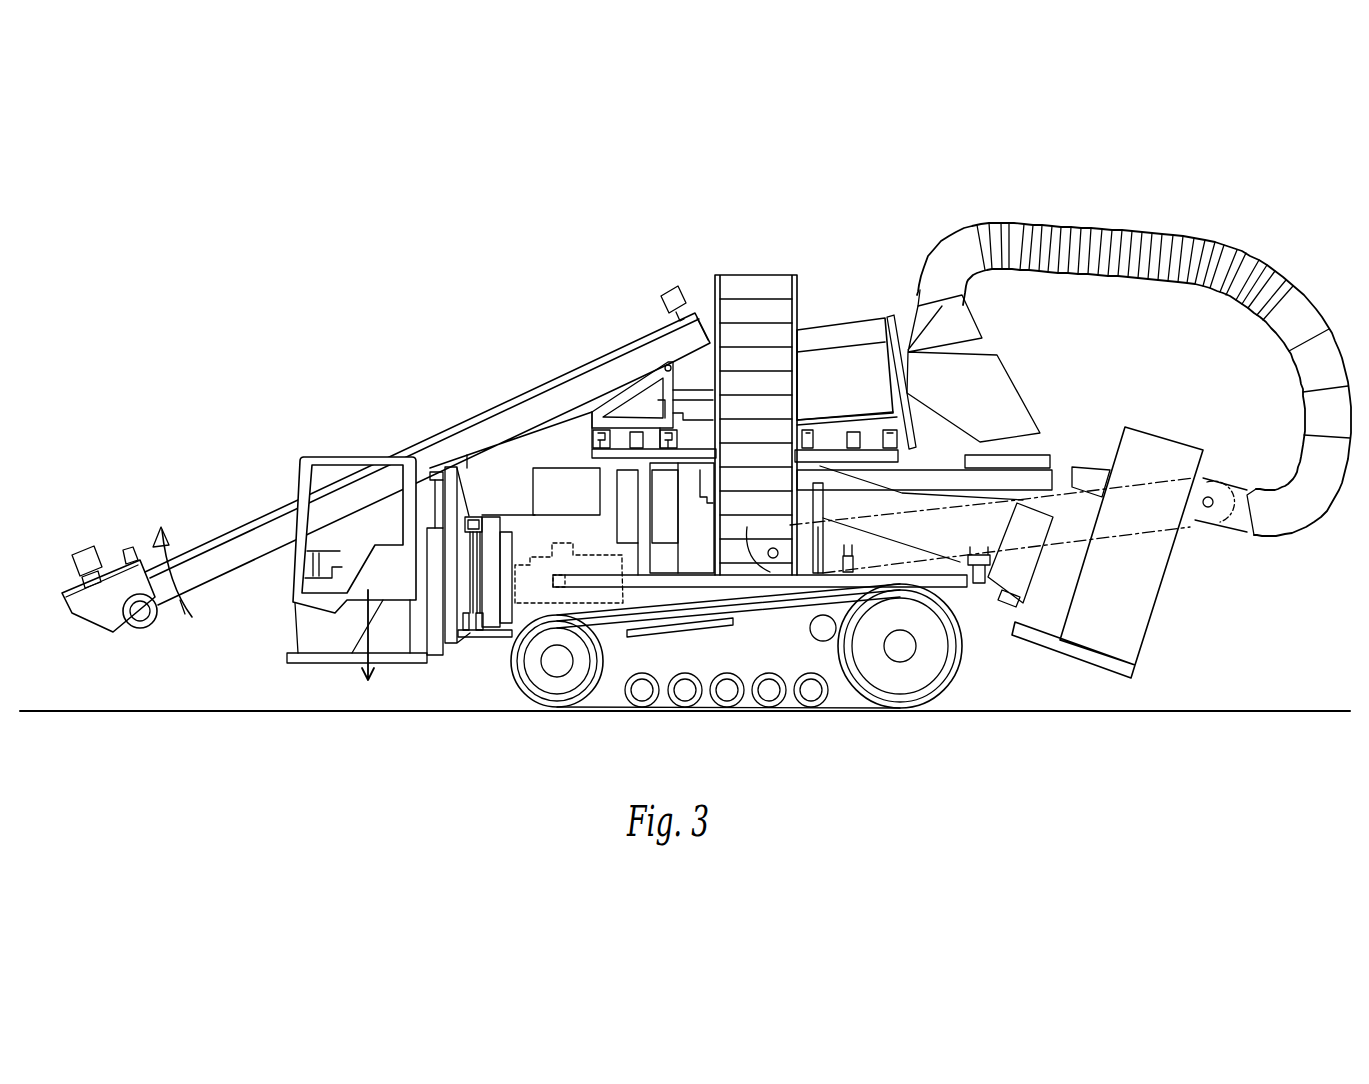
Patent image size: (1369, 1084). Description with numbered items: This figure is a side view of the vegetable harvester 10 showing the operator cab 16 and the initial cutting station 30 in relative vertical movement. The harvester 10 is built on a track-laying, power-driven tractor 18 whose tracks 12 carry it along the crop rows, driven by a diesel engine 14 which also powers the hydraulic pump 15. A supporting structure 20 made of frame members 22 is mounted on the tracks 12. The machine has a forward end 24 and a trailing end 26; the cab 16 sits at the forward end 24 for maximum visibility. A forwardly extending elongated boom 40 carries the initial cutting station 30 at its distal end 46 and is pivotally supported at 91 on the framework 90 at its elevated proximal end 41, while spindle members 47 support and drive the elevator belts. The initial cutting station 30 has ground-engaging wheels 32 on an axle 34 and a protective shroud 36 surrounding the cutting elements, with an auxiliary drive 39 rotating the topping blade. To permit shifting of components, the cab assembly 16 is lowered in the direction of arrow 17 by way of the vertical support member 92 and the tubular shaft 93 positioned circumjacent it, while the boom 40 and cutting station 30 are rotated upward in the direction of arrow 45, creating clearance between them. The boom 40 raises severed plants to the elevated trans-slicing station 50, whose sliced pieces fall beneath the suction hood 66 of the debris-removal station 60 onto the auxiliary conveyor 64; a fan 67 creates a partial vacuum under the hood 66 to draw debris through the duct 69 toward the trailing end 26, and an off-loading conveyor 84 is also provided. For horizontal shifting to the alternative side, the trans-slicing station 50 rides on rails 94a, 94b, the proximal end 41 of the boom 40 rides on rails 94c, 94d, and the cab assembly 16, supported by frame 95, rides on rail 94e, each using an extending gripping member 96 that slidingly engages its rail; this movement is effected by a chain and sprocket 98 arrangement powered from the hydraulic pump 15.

The harvester 10 is at (472, 280).
The tracks 12 is at (506, 692).
The diesel engine 14 is at (550, 545).
The hydraulic pump 15 is at (542, 558).
The operator cab 16 is at (330, 457).
The arrow 17 is at (345, 632).
The tractor 18 is at (560, 518).
The supporting structure 20 is at (672, 580).
The frame members 22 is at (637, 492).
The forward end 24 is at (386, 645).
The trailing end 26 is at (991, 578).
The initial cutting station 30 is at (80, 621).
The ground-engaging wheels 32 is at (140, 630).
The axle 34 is at (145, 612).
The protective shroud 36 is at (116, 572).
The auxiliary drive 39 is at (85, 555).
The boom 40 is at (421, 420).
The proximal end 41 is at (693, 300).
The arrow 45 is at (172, 550).
The distal end 46 is at (203, 603).
The spindle members 47 is at (672, 290).
The trans-slicing station 50 is at (842, 295).
The debris-removal station 60 is at (904, 270).
The auxiliary conveyor 64 is at (1053, 462).
The suction hood 66 is at (902, 330).
The fan 67 is at (1127, 605).
The duct 69 is at (968, 238).
The off-loading conveyor 84 is at (762, 307).
The framework 90 is at (676, 396).
The pivot 91 is at (666, 366).
The vertical support member 92 is at (432, 474).
The tubular shaft 93 is at (438, 573).
The rail 94a is at (888, 405).
The rail 94b is at (800, 422).
The rail 94c is at (668, 445).
The rail 94d is at (590, 435).
The rail 94e is at (468, 462).
The frame 95 is at (452, 642).
The gripping member 96 is at (597, 433).
The sprocket 98 is at (632, 440).